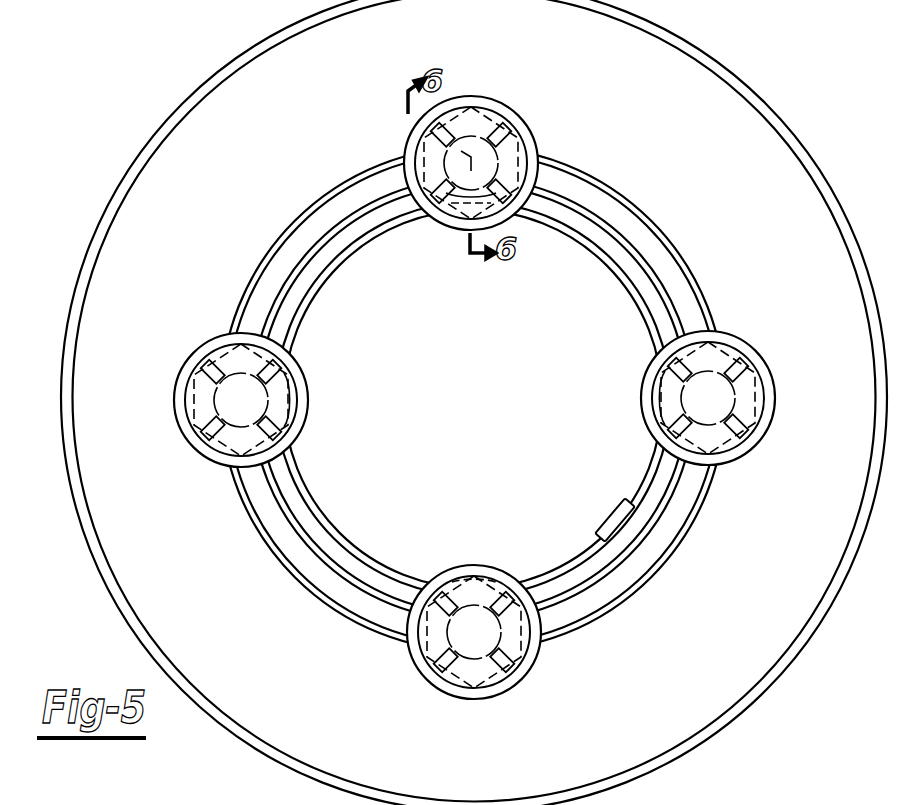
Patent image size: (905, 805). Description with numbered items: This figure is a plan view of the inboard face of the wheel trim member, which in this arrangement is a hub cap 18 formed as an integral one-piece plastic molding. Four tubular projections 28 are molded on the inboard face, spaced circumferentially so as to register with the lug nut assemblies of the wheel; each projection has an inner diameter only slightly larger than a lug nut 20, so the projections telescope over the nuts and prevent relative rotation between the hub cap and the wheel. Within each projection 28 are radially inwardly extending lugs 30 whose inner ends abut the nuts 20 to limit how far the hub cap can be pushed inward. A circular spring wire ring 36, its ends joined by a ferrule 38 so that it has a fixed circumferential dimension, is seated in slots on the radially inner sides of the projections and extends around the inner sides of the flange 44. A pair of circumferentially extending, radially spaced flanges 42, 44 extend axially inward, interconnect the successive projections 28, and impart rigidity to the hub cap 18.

The hub cap 18 is at (702, 726).
The nut 20 is at (448, 685).
The tubular projection 28 is at (523, 120).
The lug 30 is at (503, 660).
The spring wire ring 36 is at (355, 540).
The ferrule 38 is at (607, 522).
The flange 42 is at (303, 208).
The flange 44 is at (365, 208).